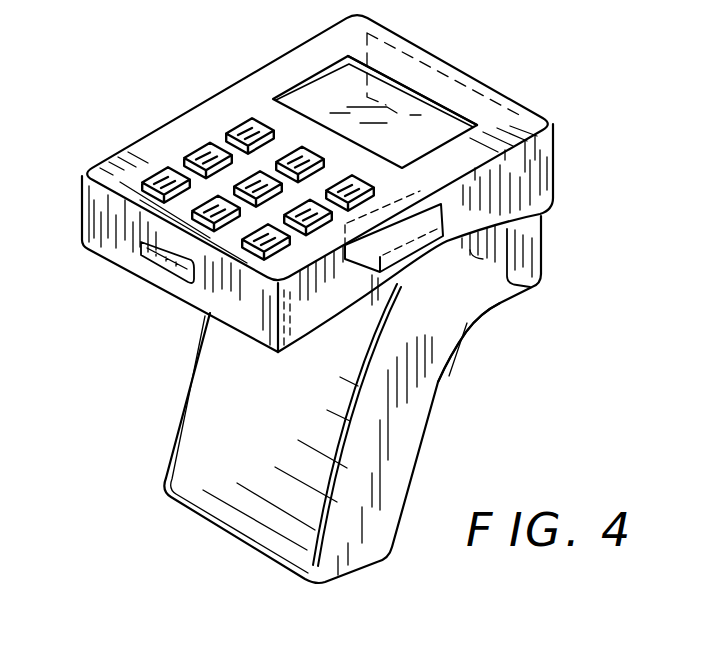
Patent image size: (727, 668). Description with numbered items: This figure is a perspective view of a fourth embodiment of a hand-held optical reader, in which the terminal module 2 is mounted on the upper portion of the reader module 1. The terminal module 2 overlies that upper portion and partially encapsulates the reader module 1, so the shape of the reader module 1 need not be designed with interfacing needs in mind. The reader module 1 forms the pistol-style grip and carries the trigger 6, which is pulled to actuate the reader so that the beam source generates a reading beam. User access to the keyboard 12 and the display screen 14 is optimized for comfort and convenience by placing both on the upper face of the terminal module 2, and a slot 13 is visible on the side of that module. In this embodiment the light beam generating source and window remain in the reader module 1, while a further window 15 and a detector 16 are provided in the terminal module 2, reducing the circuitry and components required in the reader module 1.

The reader module 1 is at (250, 520).
The terminal module 2 is at (101, 228).
The trigger 6 is at (456, 362).
The keyboard 12 is at (205, 152).
The card slot 13 is at (162, 270).
The display screen 14 is at (327, 98).
The further window 15 is at (461, 83).
The detector 16 is at (541, 289).